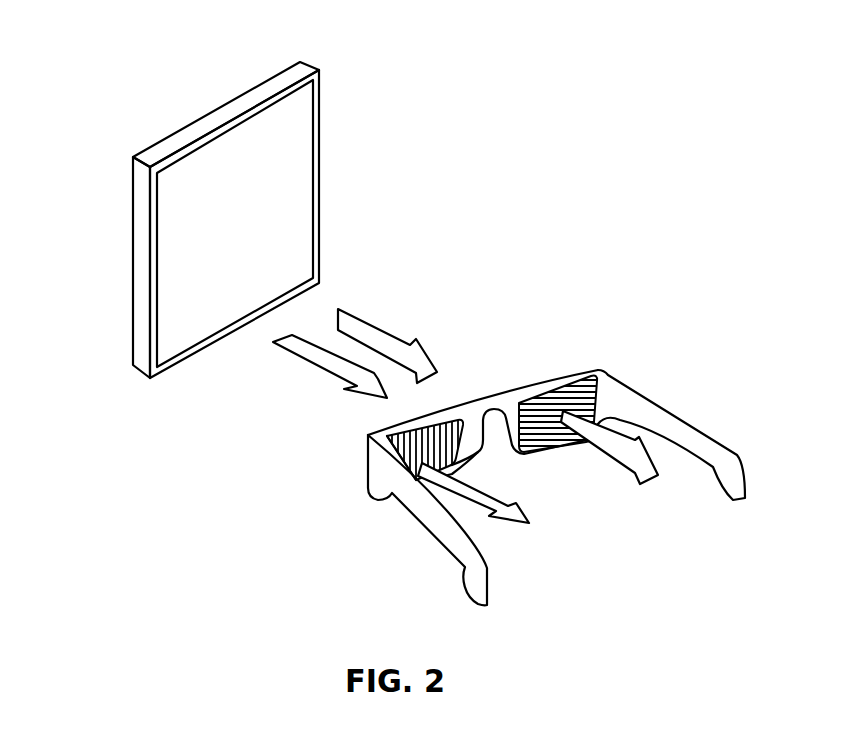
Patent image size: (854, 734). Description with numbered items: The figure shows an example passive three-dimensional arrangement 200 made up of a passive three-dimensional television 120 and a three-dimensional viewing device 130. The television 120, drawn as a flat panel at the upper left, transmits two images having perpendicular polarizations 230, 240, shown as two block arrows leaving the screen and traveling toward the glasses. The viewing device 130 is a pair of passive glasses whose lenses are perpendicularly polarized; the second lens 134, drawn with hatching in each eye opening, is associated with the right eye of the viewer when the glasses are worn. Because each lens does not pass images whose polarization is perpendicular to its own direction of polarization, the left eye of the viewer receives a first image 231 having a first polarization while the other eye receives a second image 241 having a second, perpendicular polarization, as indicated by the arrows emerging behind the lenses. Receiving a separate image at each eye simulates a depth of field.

The 3D display system 200 is at (110, 98).
The passive 3D television 120 is at (320, 145).
The 3D viewing device 130 is at (327, 502).
The second lens 134 is at (450, 419).
The polarization 230 is at (318, 366).
The polarization 240 is at (375, 328).
The first image 231 is at (517, 522).
The second image 241 is at (618, 462).